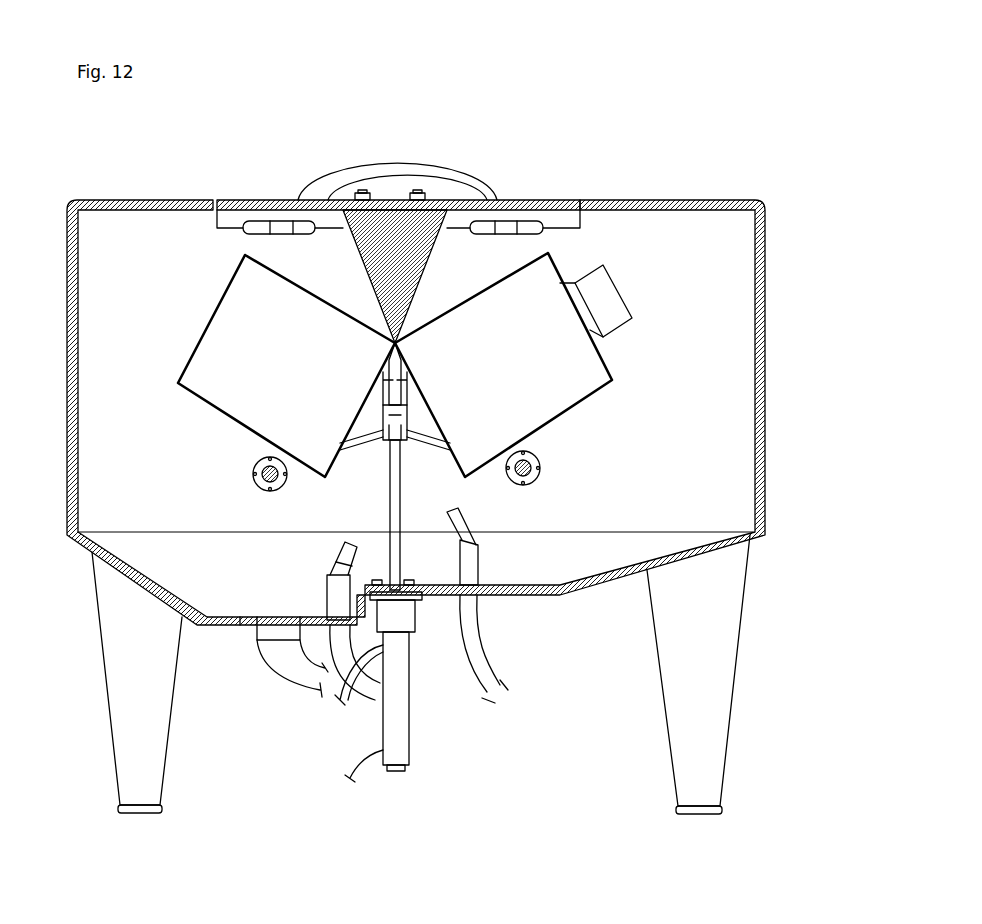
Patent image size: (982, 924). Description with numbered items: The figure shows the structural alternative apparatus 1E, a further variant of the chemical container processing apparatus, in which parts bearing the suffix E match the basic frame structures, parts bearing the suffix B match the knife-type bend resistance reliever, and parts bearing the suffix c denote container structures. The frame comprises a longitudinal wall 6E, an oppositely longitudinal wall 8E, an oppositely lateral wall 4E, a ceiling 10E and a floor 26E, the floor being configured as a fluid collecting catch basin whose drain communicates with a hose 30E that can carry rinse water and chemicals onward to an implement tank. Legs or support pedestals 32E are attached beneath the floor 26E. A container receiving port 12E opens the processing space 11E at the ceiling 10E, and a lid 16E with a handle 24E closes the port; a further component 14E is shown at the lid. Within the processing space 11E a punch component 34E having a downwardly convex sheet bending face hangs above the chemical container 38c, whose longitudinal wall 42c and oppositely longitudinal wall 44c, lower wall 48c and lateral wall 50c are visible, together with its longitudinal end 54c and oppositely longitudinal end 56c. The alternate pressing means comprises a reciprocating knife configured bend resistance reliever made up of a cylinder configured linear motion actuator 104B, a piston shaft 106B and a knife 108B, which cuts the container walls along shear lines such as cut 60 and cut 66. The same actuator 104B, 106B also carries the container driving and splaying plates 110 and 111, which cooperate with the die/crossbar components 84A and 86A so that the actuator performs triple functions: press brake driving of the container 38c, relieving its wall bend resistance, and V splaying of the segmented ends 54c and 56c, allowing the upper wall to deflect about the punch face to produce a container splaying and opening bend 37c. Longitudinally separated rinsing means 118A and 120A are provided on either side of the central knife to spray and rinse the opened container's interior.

The structural alternative apparatus 1E is at (567, 143).
The oppositely lateral wall 4E is at (725, 445).
The longitudinal wall 6E is at (68, 398).
The oppositely longitudinal wall 8E is at (767, 380).
The ceiling 10E is at (147, 203).
The processing space 11E is at (683, 298).
The container receiving port 12E is at (217, 222).
The light source 14E is at (517, 222).
The lid 16E is at (258, 203).
The handle 24E is at (373, 162).
The floor 26E is at (607, 590).
The hose 30E is at (273, 663).
The legs or support pedestals 32E is at (713, 645).
The punch component 34E is at (393, 257).
The container splaying and opening bend 37c is at (420, 353).
The chemical container 38c is at (622, 381).
The longitudinal wall 42c is at (213, 313).
The oppositely longitudinal wall 44c is at (606, 353).
The lower wall 48c is at (455, 395).
The lateral wall 50c is at (272, 382).
The longitudinal end 54c is at (212, 363).
The oppositely longitudinal end 56c is at (555, 267).
The shear line or cut 60 is at (365, 383).
The shear line or cut 66 is at (418, 373).
The die/crossbar component 84A is at (252, 474).
The die/crossbar component 86A is at (540, 468).
The linear motion actuator 104B is at (402, 678).
The piston shaft 106B is at (397, 482).
The knife 108B is at (383, 378).
The container driving and splaying plate 110 is at (337, 462).
The container driving and splaying plate 111 is at (445, 453).
The rinsing means 118A is at (333, 582).
The rinsing means 120A is at (467, 550).